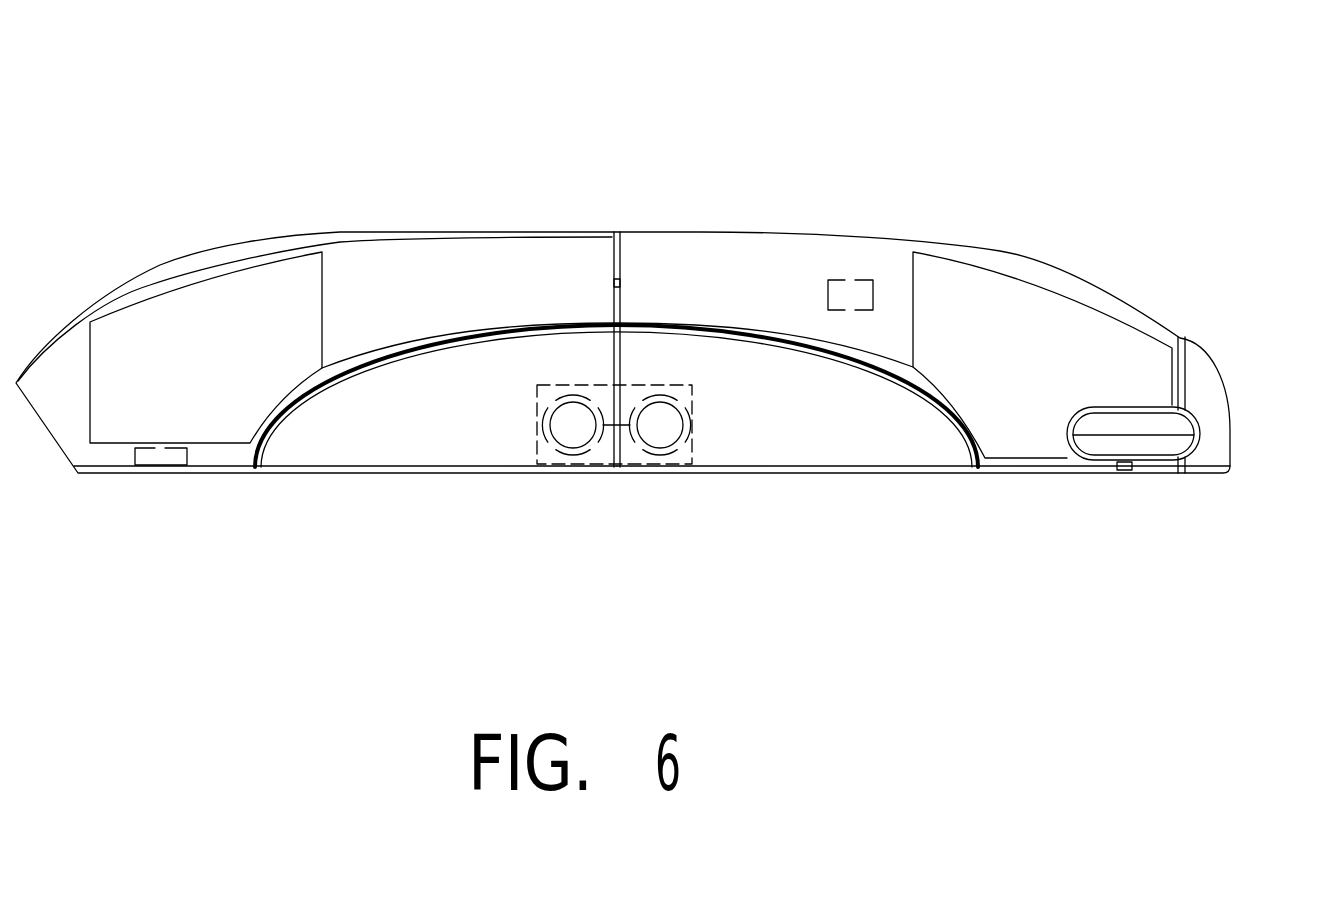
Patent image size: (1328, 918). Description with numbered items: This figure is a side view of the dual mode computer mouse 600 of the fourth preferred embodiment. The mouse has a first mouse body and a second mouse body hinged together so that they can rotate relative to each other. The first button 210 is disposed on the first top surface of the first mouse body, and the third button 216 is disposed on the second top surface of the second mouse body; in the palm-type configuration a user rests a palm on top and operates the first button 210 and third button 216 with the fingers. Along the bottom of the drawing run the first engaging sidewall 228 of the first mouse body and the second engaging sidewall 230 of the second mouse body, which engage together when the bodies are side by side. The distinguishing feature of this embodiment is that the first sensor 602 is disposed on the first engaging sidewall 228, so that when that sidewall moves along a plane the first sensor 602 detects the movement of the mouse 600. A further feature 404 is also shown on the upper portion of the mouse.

The dual mode computer mouse 600 is at (1327, 107).
The first button 210 is at (202, 295).
The third button 216 is at (1067, 315).
The opening 404 is at (850, 292).
The first sensor 602 is at (155, 458).
The first engaging sidewall 228 is at (481, 474).
The second engaging sidewall 230 is at (800, 473).